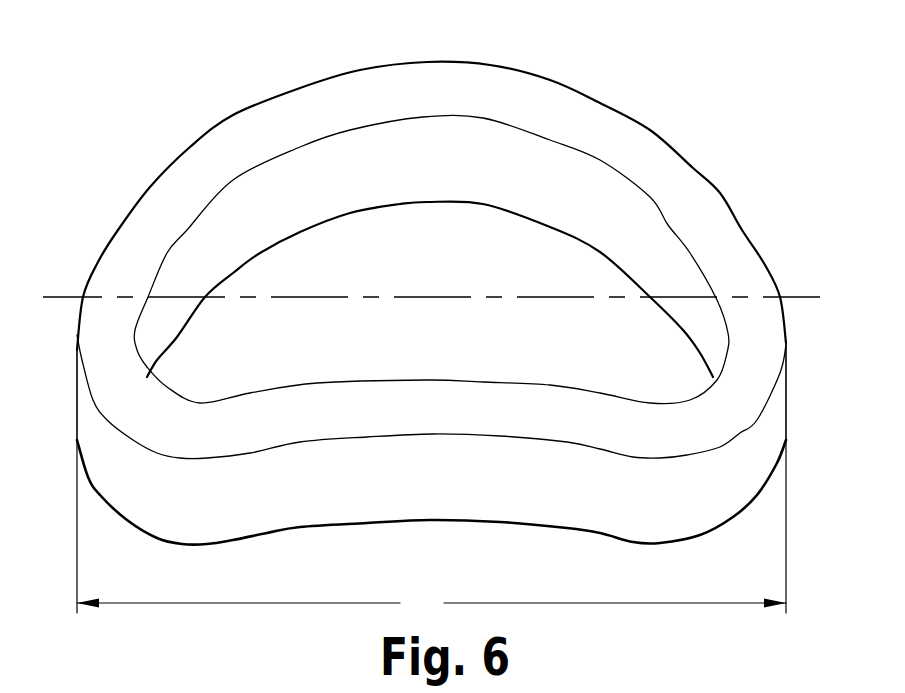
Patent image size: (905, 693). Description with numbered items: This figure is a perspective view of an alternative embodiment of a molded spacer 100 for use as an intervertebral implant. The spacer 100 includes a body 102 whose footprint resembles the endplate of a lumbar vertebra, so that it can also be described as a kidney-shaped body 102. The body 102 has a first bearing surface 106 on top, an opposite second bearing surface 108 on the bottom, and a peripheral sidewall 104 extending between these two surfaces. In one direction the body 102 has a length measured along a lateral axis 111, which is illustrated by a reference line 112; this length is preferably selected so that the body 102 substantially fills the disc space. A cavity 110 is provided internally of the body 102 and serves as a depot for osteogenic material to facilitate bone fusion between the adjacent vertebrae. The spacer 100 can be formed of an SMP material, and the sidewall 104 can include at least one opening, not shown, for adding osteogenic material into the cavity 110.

The molded spacer 100 is at (644, 56).
The body 102 is at (192, 162).
The peripheral sidewall 104 is at (122, 473).
The first bearing surface 106 is at (105, 380).
The second bearing surface 108 is at (223, 545).
The cavity 110 is at (382, 258).
The lateral axis 111 is at (57, 297).
The reference line 112 is at (431, 529).